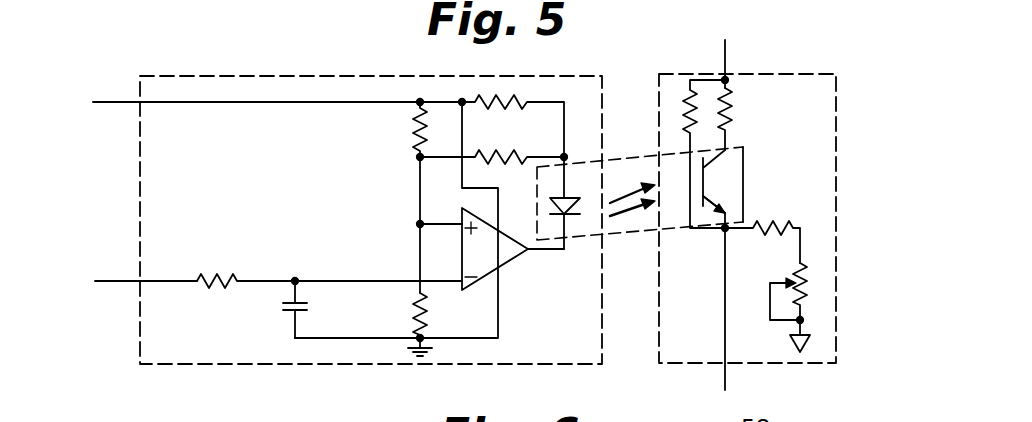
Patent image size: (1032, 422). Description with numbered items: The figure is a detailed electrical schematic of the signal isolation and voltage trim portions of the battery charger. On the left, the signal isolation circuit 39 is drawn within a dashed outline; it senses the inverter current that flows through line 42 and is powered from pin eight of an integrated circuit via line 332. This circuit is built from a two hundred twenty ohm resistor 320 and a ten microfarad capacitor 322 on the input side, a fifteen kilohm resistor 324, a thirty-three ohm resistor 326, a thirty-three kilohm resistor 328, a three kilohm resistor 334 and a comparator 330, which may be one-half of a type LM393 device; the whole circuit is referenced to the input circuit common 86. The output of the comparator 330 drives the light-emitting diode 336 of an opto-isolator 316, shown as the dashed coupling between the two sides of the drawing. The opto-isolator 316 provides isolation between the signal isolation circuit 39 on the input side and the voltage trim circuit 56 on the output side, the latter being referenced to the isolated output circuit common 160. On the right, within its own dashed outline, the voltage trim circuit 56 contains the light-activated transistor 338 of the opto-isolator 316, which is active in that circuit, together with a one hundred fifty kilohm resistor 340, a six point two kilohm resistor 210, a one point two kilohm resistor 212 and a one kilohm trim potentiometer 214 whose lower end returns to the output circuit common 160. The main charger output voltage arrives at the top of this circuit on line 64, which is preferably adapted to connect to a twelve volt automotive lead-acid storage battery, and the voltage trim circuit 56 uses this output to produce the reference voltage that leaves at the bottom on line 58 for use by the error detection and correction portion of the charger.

The signal isolation circuit 39 is at (203, 366).
The line 42 is at (134, 283).
The line 332 is at (292, 103).
The 15K resistor 324 is at (417, 112).
The 3K resistor 334 is at (486, 100).
The 33K resistor 328 is at (489, 162).
The comparator 330 is at (506, 266).
The light-emitting diode 336 is at (553, 206).
The 33 ohm resistor 326 is at (427, 304).
The 220 ohm resistor 320 is at (217, 277).
The 10 uf capacitor 322 is at (285, 312).
The input circuit common 86 is at (312, 334).
The 6.2K resistor 210 is at (672, 130).
The voltage trim circuit 56 is at (838, 156).
The main output line 64 is at (727, 60).
The 150K resistor 340 is at (736, 103).
The opto-isolator 316 is at (748, 158).
The light-activated transistor 338 is at (704, 198).
The 1.2K resistor 212 is at (770, 226).
The trim potentiometer 214 is at (796, 274).
The output circuit common 160 is at (797, 326).
The line 58 is at (729, 372).